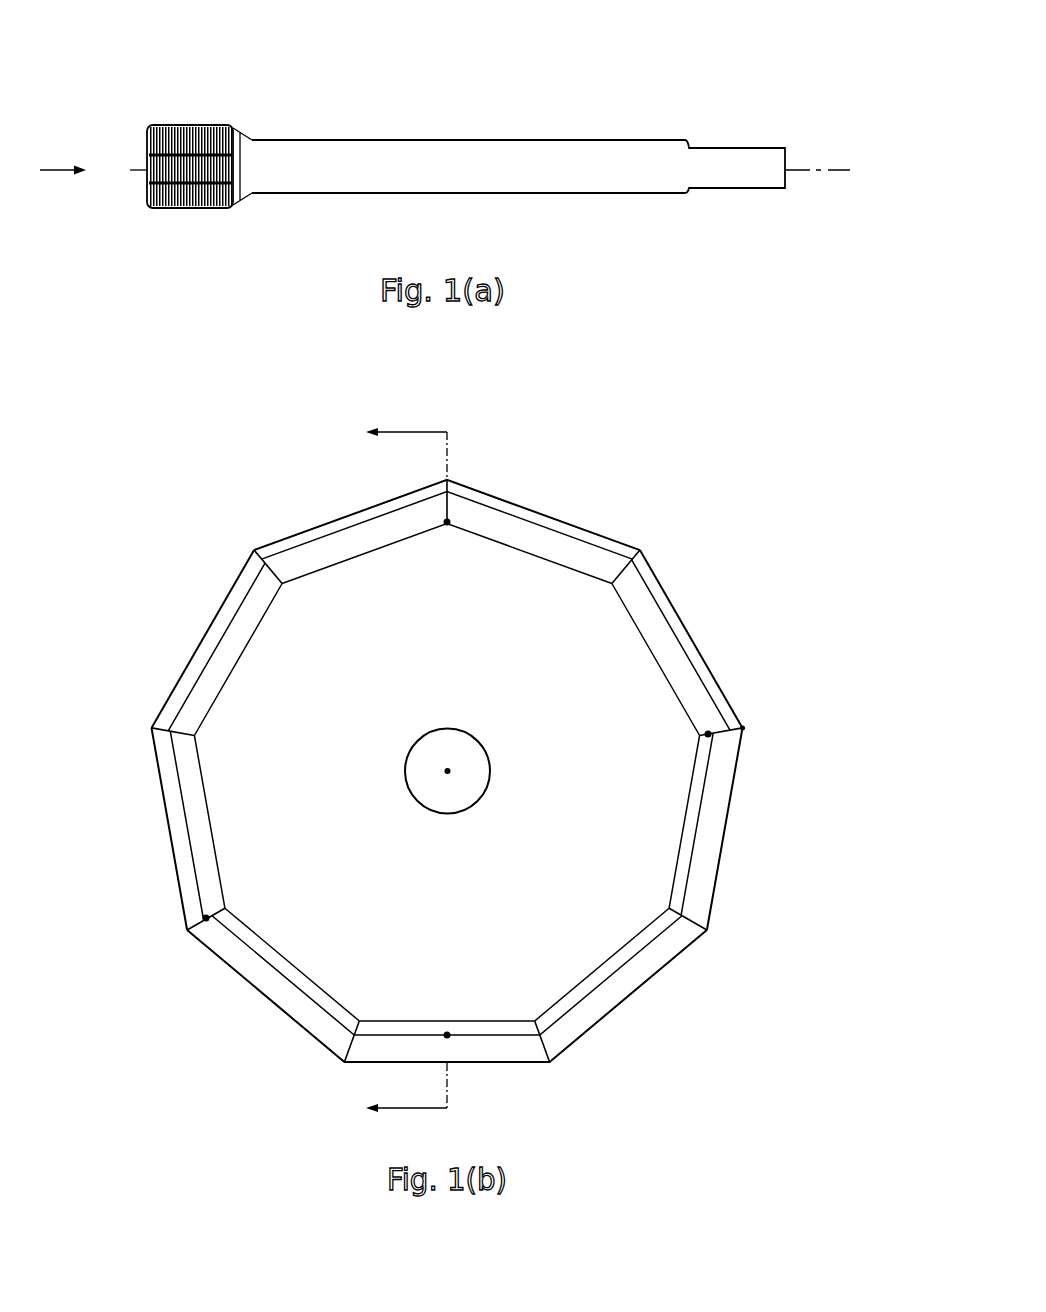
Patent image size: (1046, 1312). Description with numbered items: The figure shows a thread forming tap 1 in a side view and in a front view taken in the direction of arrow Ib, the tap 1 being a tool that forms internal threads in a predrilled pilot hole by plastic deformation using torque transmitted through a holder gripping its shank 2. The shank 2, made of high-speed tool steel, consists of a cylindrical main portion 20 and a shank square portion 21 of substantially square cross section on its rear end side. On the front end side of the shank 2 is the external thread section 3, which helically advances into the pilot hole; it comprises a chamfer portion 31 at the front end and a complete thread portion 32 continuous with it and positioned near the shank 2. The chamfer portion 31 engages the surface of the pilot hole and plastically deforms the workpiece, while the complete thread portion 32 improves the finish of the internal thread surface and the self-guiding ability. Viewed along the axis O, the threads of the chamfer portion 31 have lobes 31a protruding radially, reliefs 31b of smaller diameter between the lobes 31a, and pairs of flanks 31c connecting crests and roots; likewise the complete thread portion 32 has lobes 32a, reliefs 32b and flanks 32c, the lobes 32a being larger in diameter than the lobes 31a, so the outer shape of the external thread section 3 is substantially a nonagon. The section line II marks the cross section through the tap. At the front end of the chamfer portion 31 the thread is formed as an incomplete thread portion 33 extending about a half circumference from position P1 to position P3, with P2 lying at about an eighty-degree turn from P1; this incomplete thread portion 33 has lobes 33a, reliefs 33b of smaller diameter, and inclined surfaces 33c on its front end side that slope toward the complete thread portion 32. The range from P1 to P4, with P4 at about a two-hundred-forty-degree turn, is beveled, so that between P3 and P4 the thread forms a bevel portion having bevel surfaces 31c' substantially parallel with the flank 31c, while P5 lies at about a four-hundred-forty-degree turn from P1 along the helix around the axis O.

In FIG. 1A, the thread forming tap 1 is at (830, 56).
In FIG. 1B, the thread forming tap 1 is at (812, 387).
In FIG. 1A, the shank 2 is at (648, 103).
In FIG. 1A, the external thread section 3 is at (272, 99).
In FIG. 1B, the external thread section 3 is at (686, 439).
In FIG. 1A, the main portion 20 is at (465, 152).
In FIG. 1A, the shank square portion 21 is at (738, 157).
In FIG. 1A, the chamfer portion 31 is at (150, 126).
In FIG. 1B, the chamfer portion 31 is at (327, 437).
In FIG. 1B, the lobes 31a is at (265, 560).
In FIG. 1B, the reliefs 31b is at (303, 543).
In FIG. 1B, the flanks 31c is at (447, 478).
In FIG. 1B, the bevel surfaces 31c' is at (366, 964).
In FIG. 1A, the complete thread portion 32 is at (192, 125).
In FIG. 1B, the complete thread portion 32 is at (104, 950).
In FIG. 1B, the lobes 32a is at (196, 932).
In FIG. 1B, the reliefs 32b is at (237, 957).
In FIG. 1B, the flanks 32c is at (208, 978).
In FIG. 1B, the incomplete thread portion 33 is at (826, 903).
In FIG. 1B, the lobes 33a is at (683, 908).
In FIG. 1B, the reliefs 33b is at (668, 938).
In FIG. 1B, the inclined surfaces 33c is at (645, 982).
In FIG. 1B, the position P1 is at (441, 530).
In FIG. 1B, the position P2 is at (740, 750).
In FIG. 1B, the position P3 is at (447, 1030).
In FIG. 1B, the position P4 is at (215, 919).
In FIG. 1B, the position P5 is at (746, 727).
In FIG. 1A, the axis O is at (832, 168).
In FIG. 1B, the axis O is at (452, 765).
In FIG. 1B, the section line II is at (394, 771).
In FIG. 1A, the arrow Ib is at (93, 171).